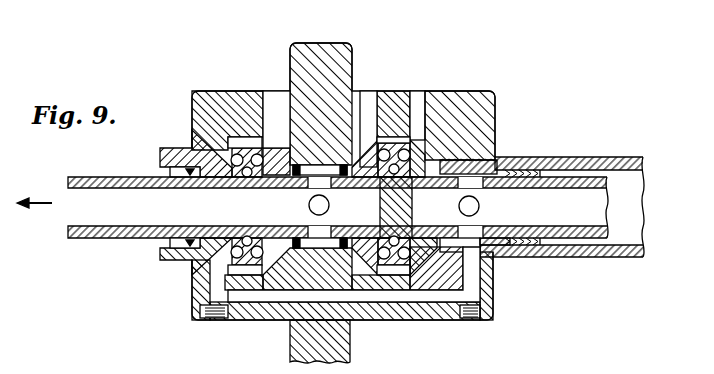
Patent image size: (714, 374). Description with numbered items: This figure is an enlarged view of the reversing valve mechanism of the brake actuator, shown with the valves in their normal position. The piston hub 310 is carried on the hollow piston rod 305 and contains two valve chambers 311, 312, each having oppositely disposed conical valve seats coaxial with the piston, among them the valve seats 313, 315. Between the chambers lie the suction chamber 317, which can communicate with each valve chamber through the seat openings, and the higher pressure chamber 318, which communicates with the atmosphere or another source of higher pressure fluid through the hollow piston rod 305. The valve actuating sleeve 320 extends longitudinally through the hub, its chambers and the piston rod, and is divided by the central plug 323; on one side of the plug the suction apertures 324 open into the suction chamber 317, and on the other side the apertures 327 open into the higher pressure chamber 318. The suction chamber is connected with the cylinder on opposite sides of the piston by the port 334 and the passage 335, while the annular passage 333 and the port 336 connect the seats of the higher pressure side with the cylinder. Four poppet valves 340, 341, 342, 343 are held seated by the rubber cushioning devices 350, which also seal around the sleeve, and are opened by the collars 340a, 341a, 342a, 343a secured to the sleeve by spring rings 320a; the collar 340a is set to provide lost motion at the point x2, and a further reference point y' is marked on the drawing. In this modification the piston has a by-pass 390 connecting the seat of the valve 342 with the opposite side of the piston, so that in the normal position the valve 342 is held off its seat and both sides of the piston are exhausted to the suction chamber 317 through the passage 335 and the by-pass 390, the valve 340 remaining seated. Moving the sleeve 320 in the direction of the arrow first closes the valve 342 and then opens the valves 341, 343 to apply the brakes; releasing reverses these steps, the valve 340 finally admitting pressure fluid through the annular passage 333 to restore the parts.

The hollow piston rod 305 is at (614, 160).
The piston hub 310 is at (331, 297).
The valve chamber 311 is at (242, 140).
The valve chamber 312 is at (393, 139).
The valve seat 313 is at (196, 283).
The valve seat 315 is at (402, 303).
The suction chamber 317 is at (313, 250).
The higher pressure chamber 318 is at (495, 256).
The valve actuating sleeve 320 is at (312, 217).
The spring rings 320a is at (175, 170).
The central plug 323 is at (410, 207).
The suction apertures 324 is at (330, 203).
The apertures 327 is at (480, 206).
The annular passage 333 is at (172, 242).
The port 334 is at (273, 100).
The passage 335 is at (368, 98).
The port 336 is at (444, 92).
The valve 340 is at (205, 152).
The valve actuating collar 340a is at (196, 250).
The valve 341 is at (226, 277).
The valve actuating collar 341a is at (297, 164).
The valve 342 is at (366, 251).
The valve actuating collar 342a is at (372, 254).
The valve 343 is at (451, 163).
The valve actuating collar 343a is at (506, 166).
The rubber cushioning device 350 is at (213, 300).
The by-pass 390 is at (307, 92).
The lost motion space x2 is at (202, 252).
The reference point y' is at (511, 129).